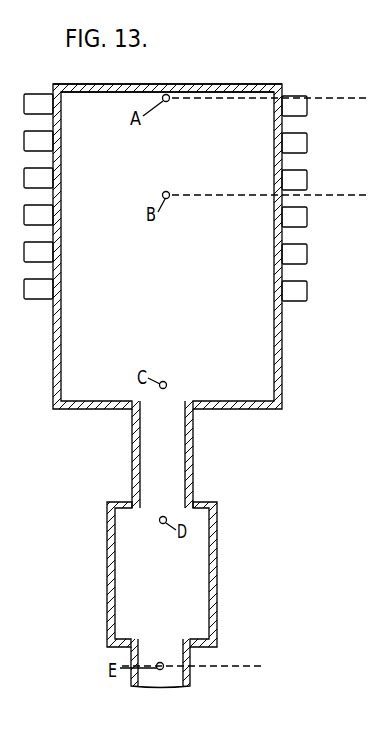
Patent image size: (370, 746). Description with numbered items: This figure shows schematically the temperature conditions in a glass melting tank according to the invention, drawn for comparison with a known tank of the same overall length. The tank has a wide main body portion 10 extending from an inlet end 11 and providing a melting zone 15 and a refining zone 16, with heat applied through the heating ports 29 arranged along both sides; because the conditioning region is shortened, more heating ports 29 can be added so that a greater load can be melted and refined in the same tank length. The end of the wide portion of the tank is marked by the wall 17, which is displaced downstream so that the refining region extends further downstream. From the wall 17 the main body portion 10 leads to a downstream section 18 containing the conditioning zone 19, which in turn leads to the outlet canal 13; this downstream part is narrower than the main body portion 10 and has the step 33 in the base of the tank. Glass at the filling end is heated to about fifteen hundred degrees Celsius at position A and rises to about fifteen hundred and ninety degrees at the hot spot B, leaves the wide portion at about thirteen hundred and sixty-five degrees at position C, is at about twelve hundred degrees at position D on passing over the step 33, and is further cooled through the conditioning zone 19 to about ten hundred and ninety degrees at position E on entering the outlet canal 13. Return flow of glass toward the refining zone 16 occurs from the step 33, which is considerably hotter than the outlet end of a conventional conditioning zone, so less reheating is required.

The main body portion 10 is at (55, 376).
The inlet end 11 is at (197, 88).
The outlet canal 13 is at (191, 668).
The melting zone 15 is at (169, 157).
The refining zone 16 is at (171, 357).
The wall 17 is at (232, 409).
The downstream section 18 is at (219, 553).
The conditioning zone 19 is at (168, 587).
The ports 29 is at (304, 252).
The step 33 is at (155, 505).